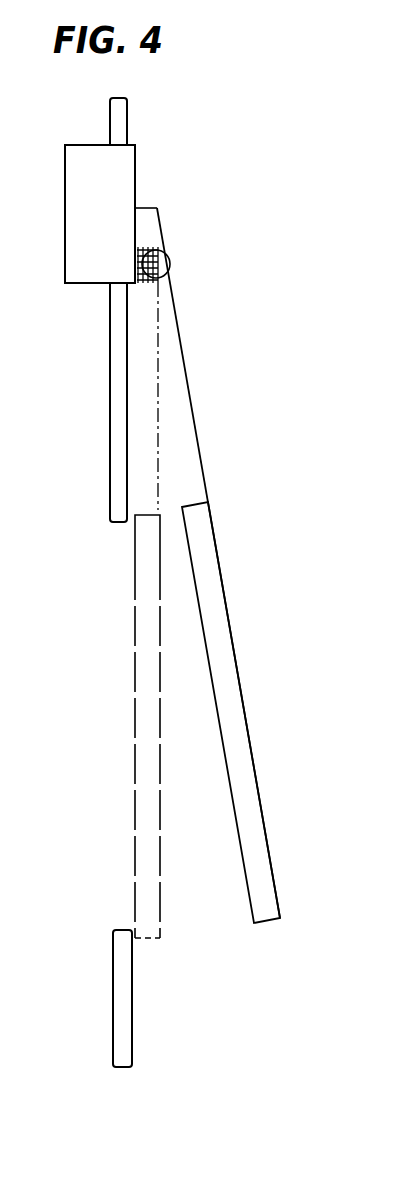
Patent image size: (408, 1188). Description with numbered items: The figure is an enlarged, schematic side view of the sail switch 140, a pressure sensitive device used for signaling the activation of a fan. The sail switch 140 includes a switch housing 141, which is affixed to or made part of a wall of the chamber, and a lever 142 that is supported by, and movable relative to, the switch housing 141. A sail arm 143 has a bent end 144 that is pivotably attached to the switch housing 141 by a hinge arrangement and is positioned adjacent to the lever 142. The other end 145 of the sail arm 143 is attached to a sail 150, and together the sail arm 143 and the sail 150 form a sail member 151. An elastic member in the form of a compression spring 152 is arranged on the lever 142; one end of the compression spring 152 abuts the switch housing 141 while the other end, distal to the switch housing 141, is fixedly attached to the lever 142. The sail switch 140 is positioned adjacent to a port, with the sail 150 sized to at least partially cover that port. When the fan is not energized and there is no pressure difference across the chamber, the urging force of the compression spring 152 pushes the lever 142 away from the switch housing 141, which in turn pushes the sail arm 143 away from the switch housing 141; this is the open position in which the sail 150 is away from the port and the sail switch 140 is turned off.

The sail switch 140 is at (260, 645).
The switch housing 141 is at (83, 158).
The lever 142 is at (168, 268).
The sail arm 143 is at (193, 400).
The bent end 144 is at (152, 207).
The other end 145 is at (208, 493).
The sail 150 is at (220, 582).
The sail member 151 is at (238, 395).
The compression spring 152 is at (137, 250).